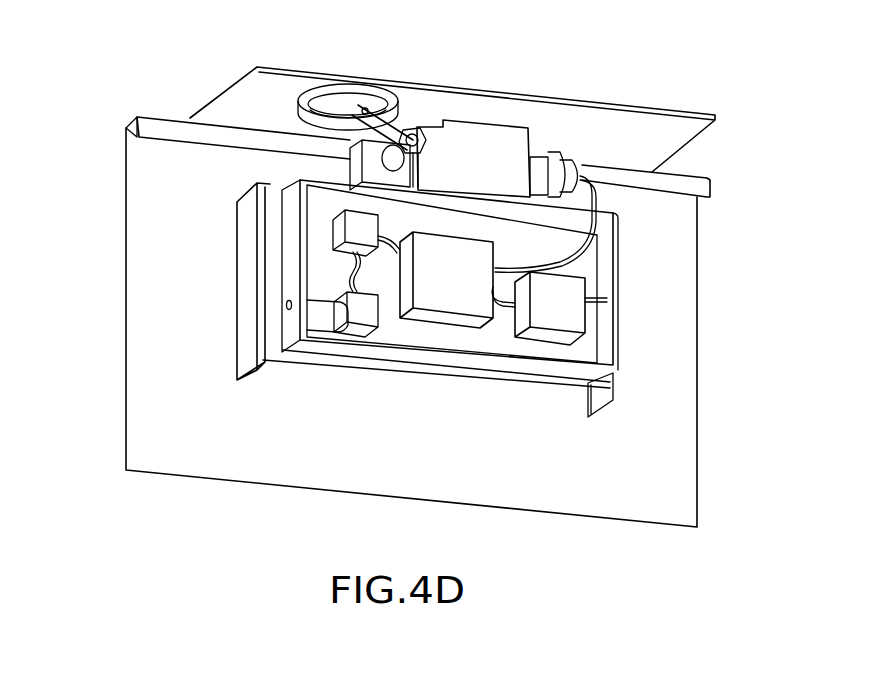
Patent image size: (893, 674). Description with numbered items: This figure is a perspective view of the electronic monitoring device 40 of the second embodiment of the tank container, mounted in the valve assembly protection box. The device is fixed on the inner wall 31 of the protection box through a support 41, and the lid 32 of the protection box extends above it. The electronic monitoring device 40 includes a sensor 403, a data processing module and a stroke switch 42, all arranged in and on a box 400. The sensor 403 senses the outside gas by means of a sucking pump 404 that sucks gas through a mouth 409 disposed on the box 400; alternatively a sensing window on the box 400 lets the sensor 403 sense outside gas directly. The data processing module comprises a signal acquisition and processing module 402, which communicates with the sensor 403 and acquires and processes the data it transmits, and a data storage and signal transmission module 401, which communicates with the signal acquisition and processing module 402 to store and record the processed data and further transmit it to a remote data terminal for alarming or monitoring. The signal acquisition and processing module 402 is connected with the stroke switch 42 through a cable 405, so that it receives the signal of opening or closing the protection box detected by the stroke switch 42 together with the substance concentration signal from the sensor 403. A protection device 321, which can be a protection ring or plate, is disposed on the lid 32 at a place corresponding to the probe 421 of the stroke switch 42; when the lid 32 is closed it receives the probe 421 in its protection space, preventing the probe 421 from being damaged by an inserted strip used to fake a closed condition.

The inner wall 31 is at (148, 170).
The lid 32 is at (600, 115).
The protection device 321 is at (323, 95).
The stroke switch 42 is at (485, 130).
The probe 421 is at (397, 130).
The cable 405 is at (710, 183).
The electronic monitoring device 40 is at (615, 273).
The box 400 is at (547, 375).
The data storage and signal transmission module 401 is at (570, 312).
The signal acquisition and processing module 402 is at (445, 298).
The sensor 403 is at (353, 230).
The sucking pump 404 is at (368, 312).
The mouth 409 is at (287, 305).
The support 41 is at (242, 355).